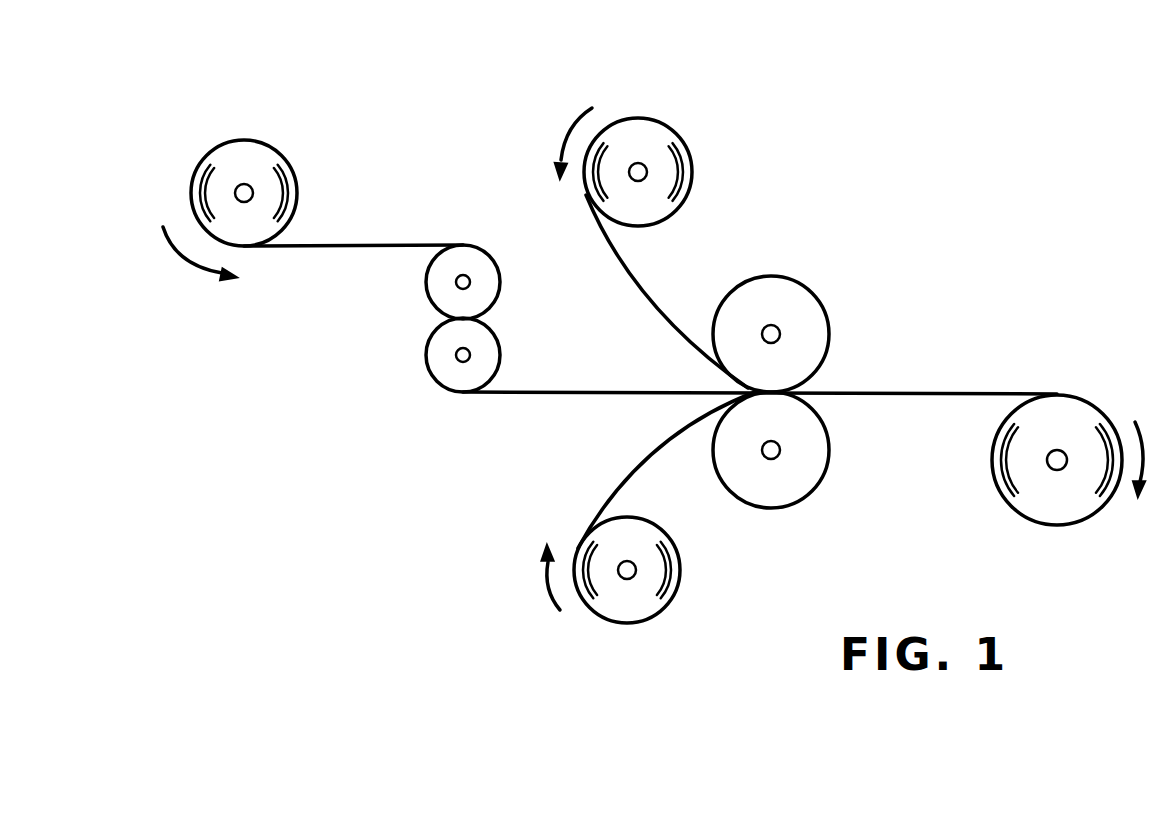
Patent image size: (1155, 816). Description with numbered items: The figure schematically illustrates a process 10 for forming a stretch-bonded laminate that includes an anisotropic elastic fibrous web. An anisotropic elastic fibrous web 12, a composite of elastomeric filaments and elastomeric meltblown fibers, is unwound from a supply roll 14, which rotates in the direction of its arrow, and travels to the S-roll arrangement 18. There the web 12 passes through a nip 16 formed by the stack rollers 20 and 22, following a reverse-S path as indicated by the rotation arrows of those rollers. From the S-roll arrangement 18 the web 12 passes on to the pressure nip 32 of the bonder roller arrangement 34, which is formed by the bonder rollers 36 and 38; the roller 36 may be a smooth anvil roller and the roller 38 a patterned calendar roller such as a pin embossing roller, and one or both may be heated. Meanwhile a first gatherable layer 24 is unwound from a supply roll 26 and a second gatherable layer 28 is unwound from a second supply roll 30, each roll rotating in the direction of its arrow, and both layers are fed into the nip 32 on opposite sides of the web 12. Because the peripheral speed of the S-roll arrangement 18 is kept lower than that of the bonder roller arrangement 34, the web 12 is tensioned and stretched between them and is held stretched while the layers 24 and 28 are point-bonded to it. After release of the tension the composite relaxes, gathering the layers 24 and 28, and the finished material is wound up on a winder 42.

The process for forming a stretch-bonded laminate 10 is at (1000, 102).
The anisotropic elastic fibrous web 12 is at (352, 244).
The supply roll 14 is at (226, 135).
The nip 16 is at (501, 326).
The S-roll arrangement 18 is at (435, 326).
The stack roller 20 is at (491, 257).
The stack roller 22 is at (437, 388).
The first gatherable layer 24 is at (614, 262).
The supply roll 26 is at (675, 130).
The second gatherable layer 28 is at (648, 455).
The second supply roll 30 is at (680, 590).
The nip 32 is at (698, 338).
The bonder roller arrangement 34 is at (828, 398).
The bonder roller 36 is at (810, 294).
The bonder roller 38 is at (810, 490).
The winder 42 is at (1083, 404).